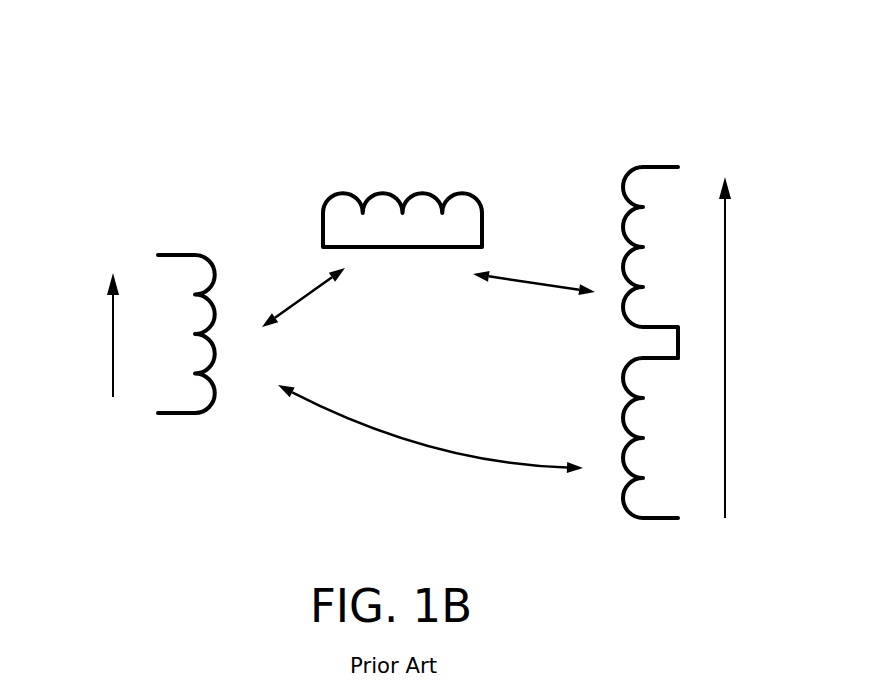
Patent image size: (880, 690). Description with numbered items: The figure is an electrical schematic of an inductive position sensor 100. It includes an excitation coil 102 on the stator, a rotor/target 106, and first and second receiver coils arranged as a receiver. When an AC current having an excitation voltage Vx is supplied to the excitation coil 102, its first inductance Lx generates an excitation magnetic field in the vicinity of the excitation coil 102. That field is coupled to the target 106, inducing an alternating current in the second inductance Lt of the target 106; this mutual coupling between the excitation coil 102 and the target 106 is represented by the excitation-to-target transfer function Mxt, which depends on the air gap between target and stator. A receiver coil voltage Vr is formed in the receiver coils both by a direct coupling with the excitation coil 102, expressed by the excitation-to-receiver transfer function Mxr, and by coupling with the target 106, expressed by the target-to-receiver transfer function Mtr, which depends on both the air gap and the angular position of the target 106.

The inductive position sensor 100 is at (166, 86).
The excitation coil 102 is at (215, 272).
The rotor/target 106 is at (467, 212).